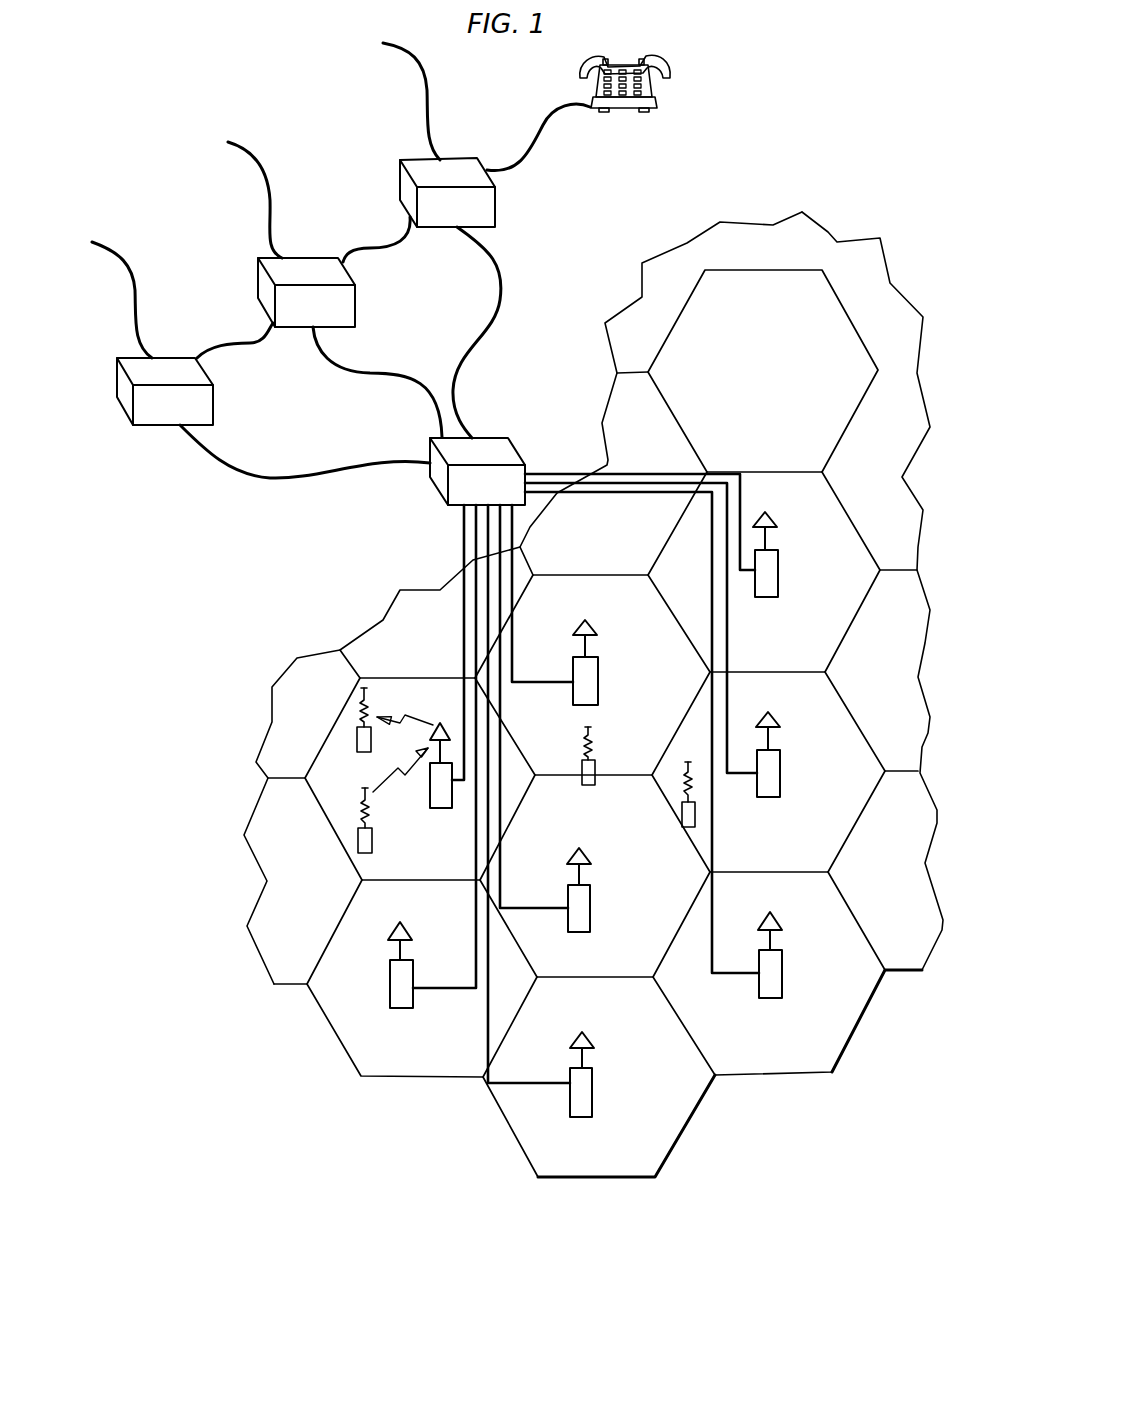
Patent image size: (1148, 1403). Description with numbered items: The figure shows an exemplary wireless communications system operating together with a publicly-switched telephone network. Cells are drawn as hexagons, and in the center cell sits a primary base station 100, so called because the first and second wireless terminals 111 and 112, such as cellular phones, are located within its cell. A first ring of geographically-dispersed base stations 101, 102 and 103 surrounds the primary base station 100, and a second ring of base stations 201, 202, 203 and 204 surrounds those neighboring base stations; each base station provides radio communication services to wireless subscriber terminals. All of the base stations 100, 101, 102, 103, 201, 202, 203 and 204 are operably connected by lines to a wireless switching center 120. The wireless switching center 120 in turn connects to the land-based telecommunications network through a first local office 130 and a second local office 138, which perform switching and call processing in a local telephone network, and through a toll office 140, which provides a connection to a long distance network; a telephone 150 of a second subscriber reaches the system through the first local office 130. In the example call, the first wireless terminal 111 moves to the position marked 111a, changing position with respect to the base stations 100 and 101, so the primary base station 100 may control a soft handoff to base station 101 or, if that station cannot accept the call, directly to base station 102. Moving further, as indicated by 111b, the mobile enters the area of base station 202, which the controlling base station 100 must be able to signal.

The primary base station 100 is at (431, 800).
The base station 101 is at (599, 679).
The base station 102 is at (591, 897).
The base station 103 is at (414, 977).
The first wireless terminal 111 is at (358, 843).
The first wireless terminal (moved position) 111a is at (596, 768).
The first wireless terminal (further moved position) 111b is at (682, 813).
The second wireless terminal 112 is at (357, 743).
The wireless switching center 120 is at (514, 451).
The first local office 130 is at (496, 204).
The second local office 138 is at (214, 403).
The toll office 140 is at (356, 303).
The telephone 150 is at (660, 62).
The base station 201 is at (779, 567).
The base station 202 is at (781, 765).
The base station 203 is at (783, 970).
The base station 204 is at (593, 1084).